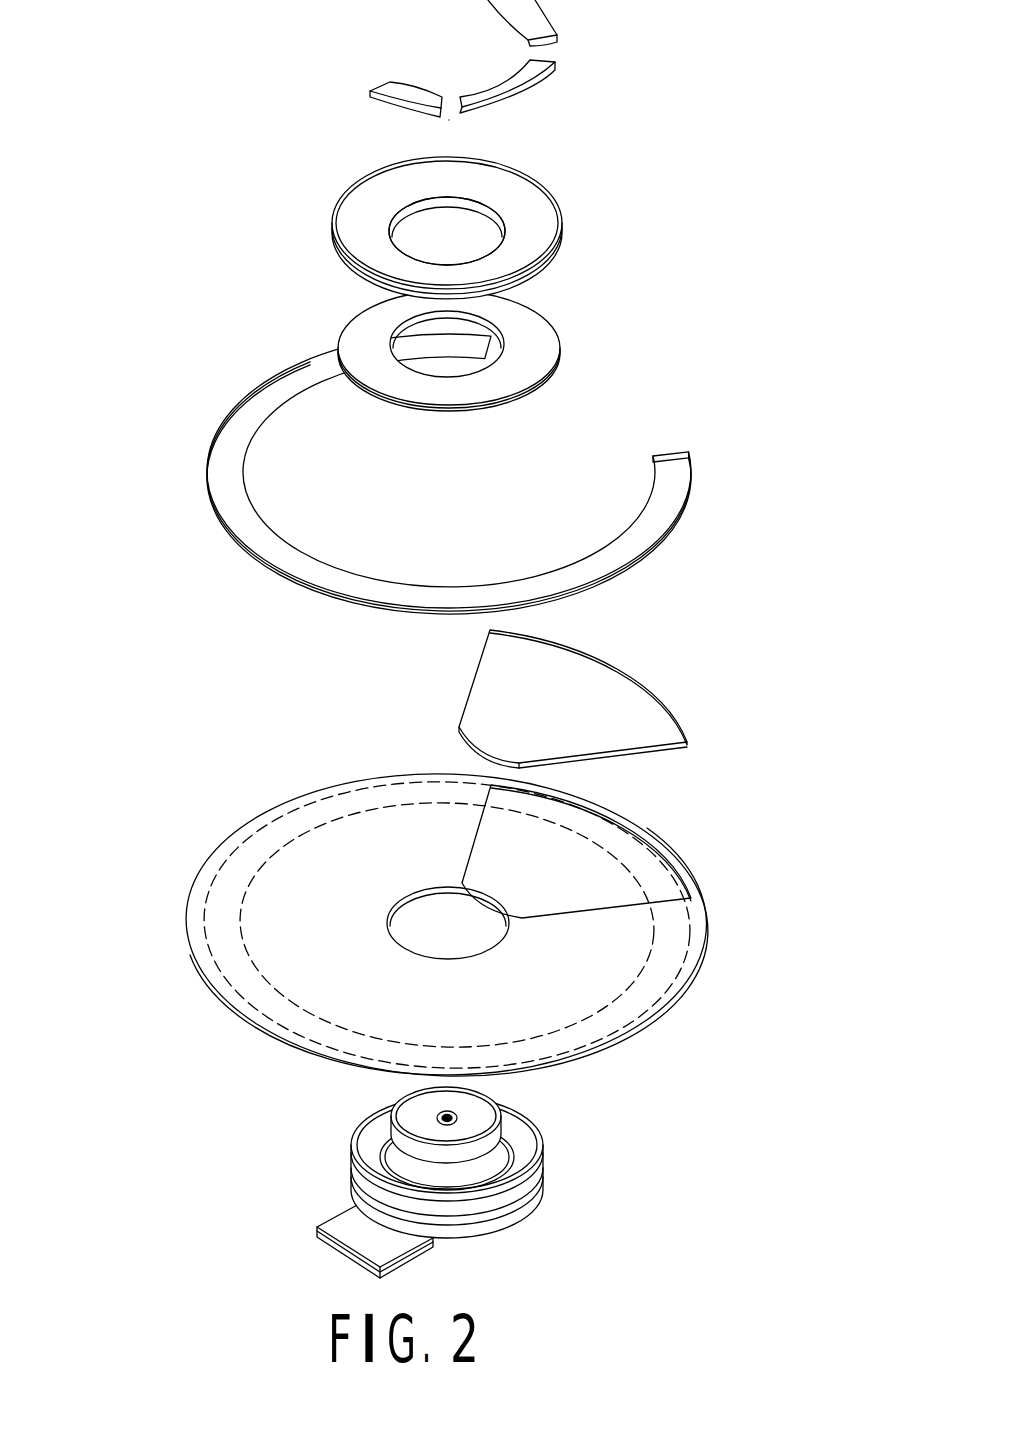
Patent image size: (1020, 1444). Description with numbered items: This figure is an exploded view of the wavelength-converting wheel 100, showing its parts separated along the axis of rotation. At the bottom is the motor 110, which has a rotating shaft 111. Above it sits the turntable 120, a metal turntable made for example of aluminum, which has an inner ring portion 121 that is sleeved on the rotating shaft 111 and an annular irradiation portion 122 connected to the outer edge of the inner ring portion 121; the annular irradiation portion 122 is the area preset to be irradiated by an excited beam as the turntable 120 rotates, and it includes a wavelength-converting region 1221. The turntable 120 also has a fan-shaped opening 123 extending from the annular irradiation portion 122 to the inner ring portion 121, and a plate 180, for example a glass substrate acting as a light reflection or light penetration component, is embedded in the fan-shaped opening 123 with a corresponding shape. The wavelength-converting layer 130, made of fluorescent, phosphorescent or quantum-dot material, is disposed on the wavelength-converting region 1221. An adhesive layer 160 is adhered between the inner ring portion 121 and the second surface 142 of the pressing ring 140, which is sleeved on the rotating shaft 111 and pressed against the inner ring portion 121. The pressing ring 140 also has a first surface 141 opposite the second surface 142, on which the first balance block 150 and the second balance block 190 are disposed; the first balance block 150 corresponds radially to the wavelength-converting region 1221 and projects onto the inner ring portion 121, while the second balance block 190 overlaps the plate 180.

The wavelength-converting wheel 100 is at (170, 33).
The motor 110 is at (497, 1182).
The rotating shaft 111 is at (473, 1113).
The turntable 120 is at (464, 881).
The inner ring portion 121 is at (272, 983).
The annular irradiation portion 122 is at (212, 955).
The wavelength-converting region 1221 is at (332, 808).
The fan-shaped opening 123 is at (640, 852).
The wavelength-converting layer 130 is at (663, 497).
The pressing ring 140 is at (474, 207).
The first surface 141 is at (512, 198).
The second surface 142 is at (430, 228).
The first balance block 150 is at (387, 90).
The adhesive layer 160 is at (537, 318).
The plate 180 is at (583, 672).
The second balance block 190 is at (532, 20).